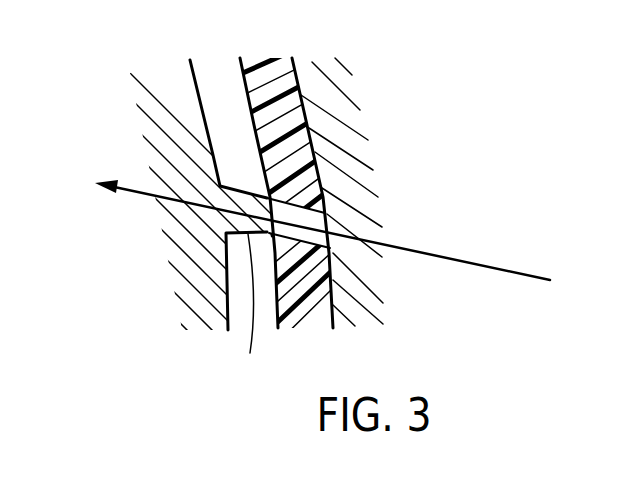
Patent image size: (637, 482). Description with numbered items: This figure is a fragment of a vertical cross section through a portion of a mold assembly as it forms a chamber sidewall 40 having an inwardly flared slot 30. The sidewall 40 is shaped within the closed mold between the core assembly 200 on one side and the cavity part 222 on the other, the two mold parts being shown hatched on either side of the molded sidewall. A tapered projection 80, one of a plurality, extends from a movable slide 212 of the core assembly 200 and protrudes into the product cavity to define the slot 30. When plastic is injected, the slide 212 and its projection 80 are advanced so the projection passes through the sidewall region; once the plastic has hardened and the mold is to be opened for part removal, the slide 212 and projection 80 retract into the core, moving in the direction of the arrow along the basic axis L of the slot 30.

The core assembly 200 is at (195, 236).
The movable slide 212 is at (112, 84).
The chamber sidewall 40 is at (268, 70).
The inwardly flared slot 30 is at (334, 238).
The cavity part 222 is at (362, 128).
The tapered projection 80 is at (250, 310).
The basic axis of the slot L is at (510, 270).